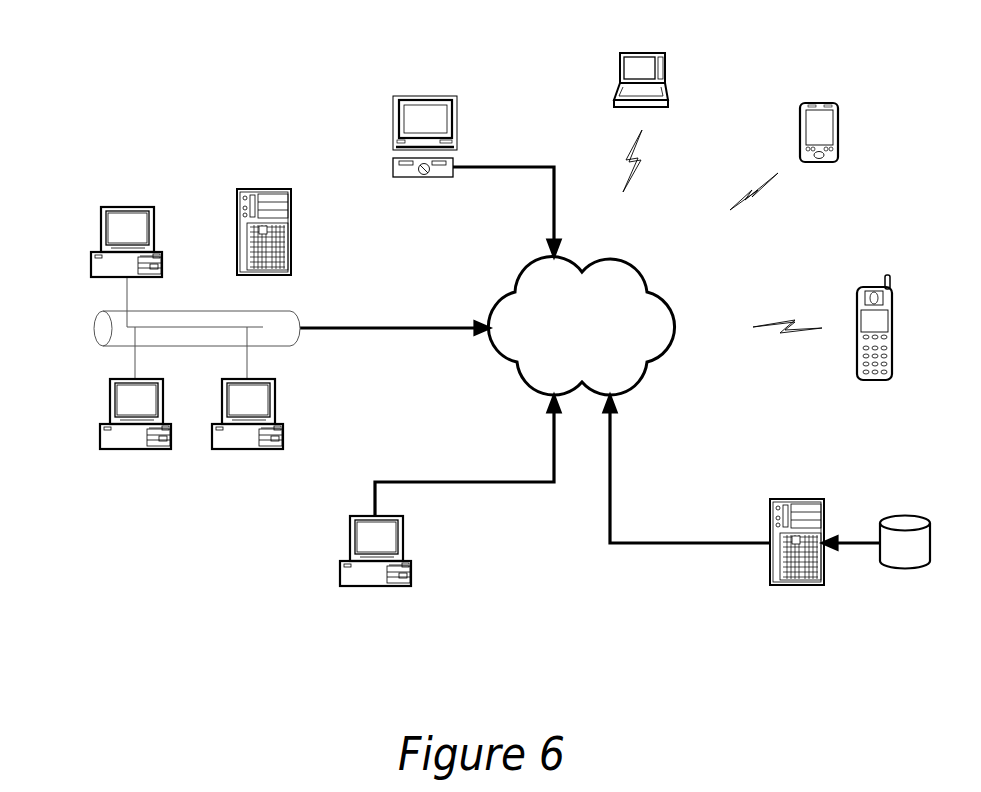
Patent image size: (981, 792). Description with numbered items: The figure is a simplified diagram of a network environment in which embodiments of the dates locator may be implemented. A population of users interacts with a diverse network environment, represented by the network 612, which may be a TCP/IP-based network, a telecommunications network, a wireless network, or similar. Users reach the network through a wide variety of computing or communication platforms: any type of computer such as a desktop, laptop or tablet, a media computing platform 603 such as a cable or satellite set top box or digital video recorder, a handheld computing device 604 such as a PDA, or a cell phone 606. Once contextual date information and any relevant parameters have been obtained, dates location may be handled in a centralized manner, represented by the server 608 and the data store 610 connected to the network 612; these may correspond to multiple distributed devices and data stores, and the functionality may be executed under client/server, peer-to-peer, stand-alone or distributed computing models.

The media computing platform 603 is at (393, 158).
The handheld computing device 604 is at (803, 103).
The cell phone 606 is at (862, 288).
The server 608 is at (778, 499).
The data store 610 is at (907, 513).
The network 612 is at (528, 270).